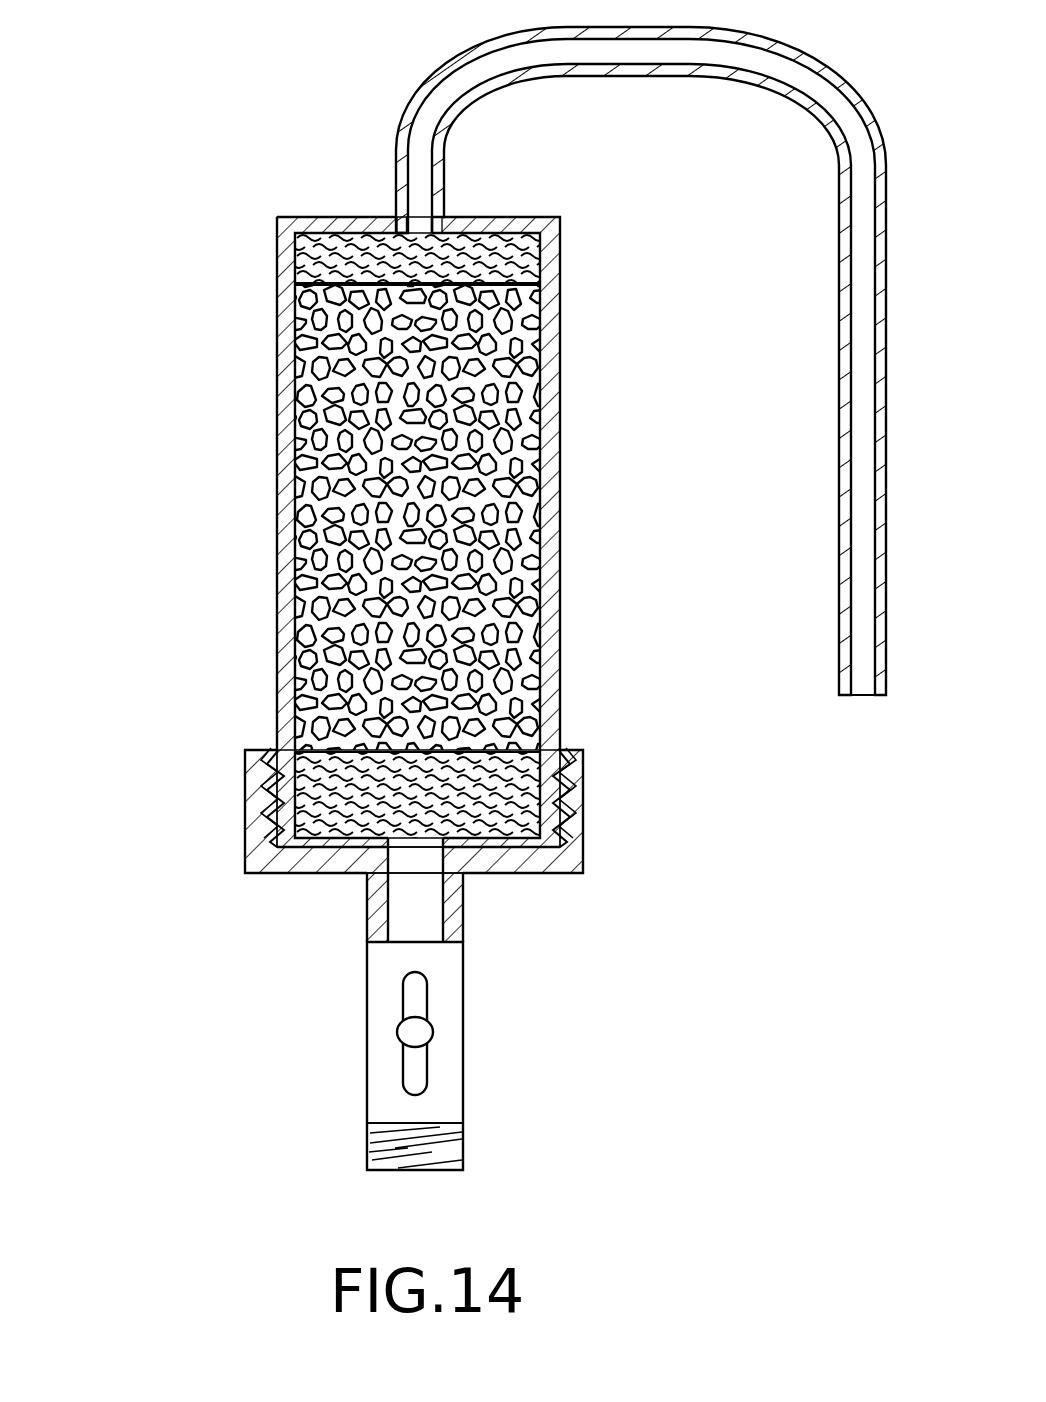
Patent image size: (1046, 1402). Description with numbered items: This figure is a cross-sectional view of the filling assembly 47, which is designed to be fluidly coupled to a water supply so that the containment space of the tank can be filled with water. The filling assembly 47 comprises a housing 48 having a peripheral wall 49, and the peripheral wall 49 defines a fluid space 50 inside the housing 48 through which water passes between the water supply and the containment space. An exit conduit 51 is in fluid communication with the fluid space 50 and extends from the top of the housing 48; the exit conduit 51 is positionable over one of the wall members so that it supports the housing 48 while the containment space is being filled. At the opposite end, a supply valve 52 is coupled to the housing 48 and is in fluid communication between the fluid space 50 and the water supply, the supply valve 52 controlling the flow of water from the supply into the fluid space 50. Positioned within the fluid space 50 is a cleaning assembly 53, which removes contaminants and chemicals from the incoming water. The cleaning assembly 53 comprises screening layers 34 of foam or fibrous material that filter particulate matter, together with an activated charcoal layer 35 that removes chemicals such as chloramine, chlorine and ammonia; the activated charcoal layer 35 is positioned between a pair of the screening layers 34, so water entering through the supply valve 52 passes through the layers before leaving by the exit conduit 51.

The screening layers 34 is at (357, 258).
The activated charcoal layer 35 is at (485, 595).
The filling assembly 47 is at (193, 764).
The housing 48 is at (560, 470).
The peripheral wall 49 is at (552, 383).
The fluid space 50 is at (510, 305).
The exit conduit 51 is at (845, 375).
The supply valve 52 is at (443, 963).
The cleaning assembly 53 is at (378, 532).